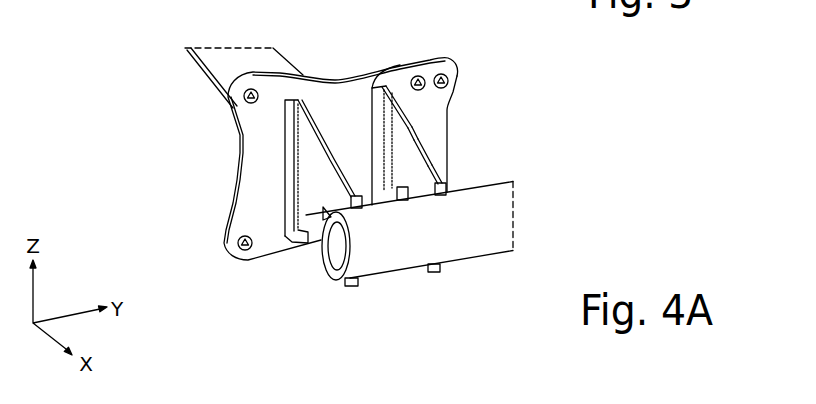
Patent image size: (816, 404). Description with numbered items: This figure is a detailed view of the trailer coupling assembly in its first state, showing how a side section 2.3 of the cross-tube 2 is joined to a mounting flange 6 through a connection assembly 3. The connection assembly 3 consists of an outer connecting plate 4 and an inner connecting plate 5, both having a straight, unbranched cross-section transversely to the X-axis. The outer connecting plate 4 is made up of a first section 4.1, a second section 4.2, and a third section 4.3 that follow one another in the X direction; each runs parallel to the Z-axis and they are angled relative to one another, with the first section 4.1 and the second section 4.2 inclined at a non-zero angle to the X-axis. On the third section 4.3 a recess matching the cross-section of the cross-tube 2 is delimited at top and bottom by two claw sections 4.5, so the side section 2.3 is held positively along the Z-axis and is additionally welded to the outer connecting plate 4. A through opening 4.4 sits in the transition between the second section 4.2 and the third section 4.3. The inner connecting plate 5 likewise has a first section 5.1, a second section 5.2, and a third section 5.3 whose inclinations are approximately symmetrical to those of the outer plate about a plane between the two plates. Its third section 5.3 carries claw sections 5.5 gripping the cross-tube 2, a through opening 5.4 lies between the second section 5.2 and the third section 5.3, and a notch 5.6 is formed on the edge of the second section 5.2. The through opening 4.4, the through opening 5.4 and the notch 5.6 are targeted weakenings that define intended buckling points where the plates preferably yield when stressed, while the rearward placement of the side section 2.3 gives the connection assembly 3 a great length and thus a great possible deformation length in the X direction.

The cross-tube 2 is at (474, 245).
The side section 2.3 is at (394, 300).
The connection assembly 3 is at (353, 77).
The outer connecting plate 4 is at (308, 236).
The first section 4.1 is at (283, 128).
The second section 4.2 is at (300, 168).
The third section 4.3 is at (343, 196).
The through opening 4.4 is at (313, 216).
The claw sections 4.5 is at (347, 175).
The inner connecting plate 5 is at (411, 62).
The first section 5.1 is at (410, 105).
The second section 5.2 is at (442, 148).
The third section 5.3 is at (443, 167).
The through opening 5.4 is at (393, 183).
The claw sections 5.5 is at (456, 185).
The notch 5.6 is at (414, 136).
The mounting flange 6 is at (238, 202).